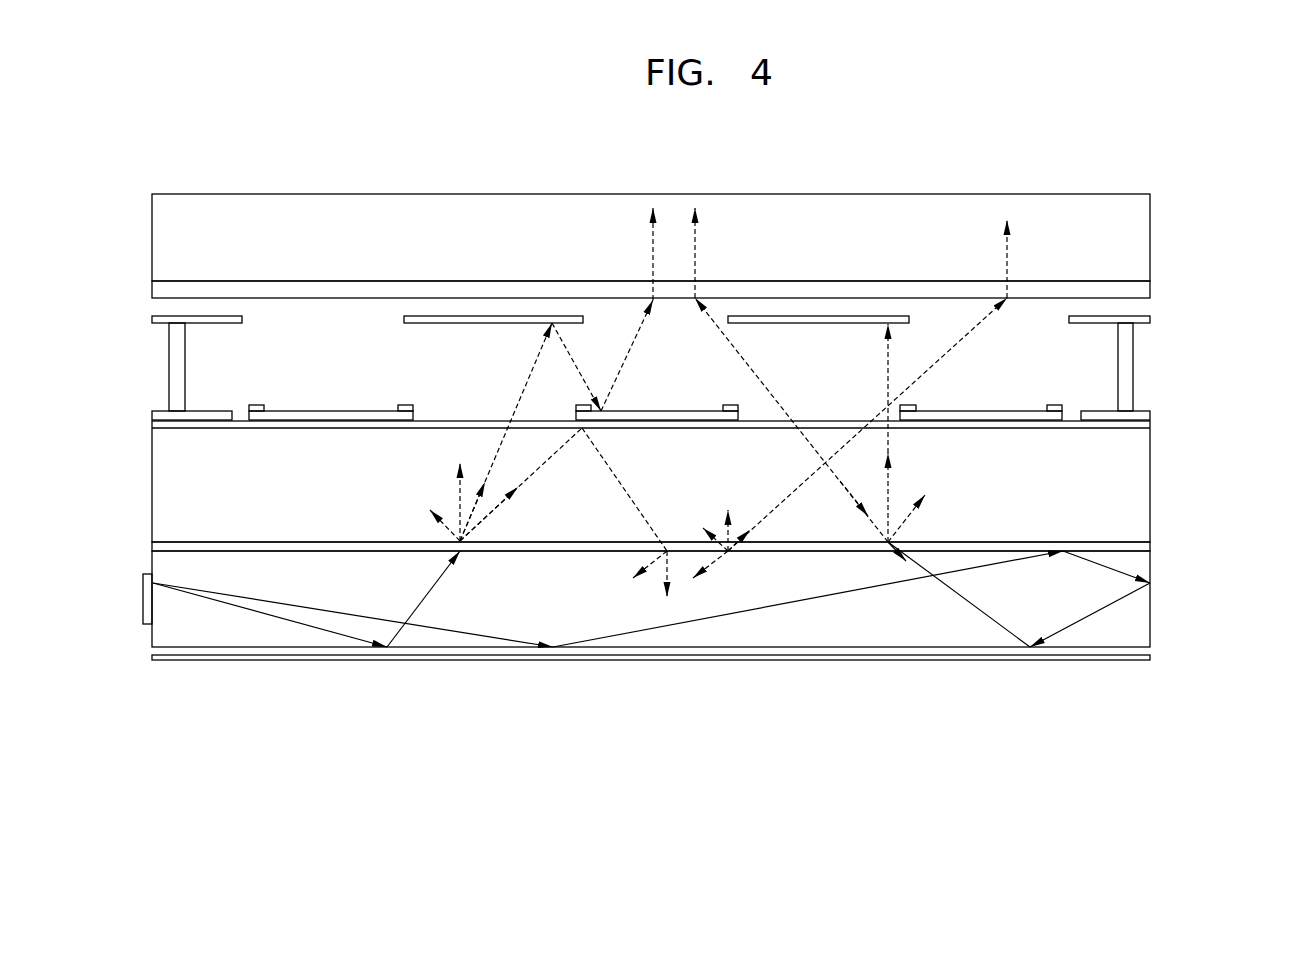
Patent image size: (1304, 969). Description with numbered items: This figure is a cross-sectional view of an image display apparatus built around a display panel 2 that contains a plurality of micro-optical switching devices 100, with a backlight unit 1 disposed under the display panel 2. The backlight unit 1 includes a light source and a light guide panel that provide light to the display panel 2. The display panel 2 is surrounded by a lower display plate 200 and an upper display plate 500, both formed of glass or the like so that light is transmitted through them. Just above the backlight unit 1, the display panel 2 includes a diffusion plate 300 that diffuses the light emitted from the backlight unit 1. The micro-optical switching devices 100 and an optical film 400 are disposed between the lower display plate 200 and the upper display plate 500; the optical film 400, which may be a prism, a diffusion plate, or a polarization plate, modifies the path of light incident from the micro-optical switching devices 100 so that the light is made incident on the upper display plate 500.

The backlight unit 1 is at (1150, 612).
The display panel 2 is at (721, 377).
The micro-optical switching devices 100 is at (1163, 297).
The lower display plate 200 is at (1150, 487).
The diffusion plate 300 is at (698, 548).
The optical film 400 is at (1150, 291).
The upper display plate 500 is at (1150, 237).